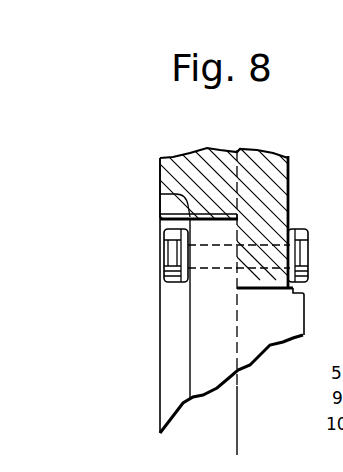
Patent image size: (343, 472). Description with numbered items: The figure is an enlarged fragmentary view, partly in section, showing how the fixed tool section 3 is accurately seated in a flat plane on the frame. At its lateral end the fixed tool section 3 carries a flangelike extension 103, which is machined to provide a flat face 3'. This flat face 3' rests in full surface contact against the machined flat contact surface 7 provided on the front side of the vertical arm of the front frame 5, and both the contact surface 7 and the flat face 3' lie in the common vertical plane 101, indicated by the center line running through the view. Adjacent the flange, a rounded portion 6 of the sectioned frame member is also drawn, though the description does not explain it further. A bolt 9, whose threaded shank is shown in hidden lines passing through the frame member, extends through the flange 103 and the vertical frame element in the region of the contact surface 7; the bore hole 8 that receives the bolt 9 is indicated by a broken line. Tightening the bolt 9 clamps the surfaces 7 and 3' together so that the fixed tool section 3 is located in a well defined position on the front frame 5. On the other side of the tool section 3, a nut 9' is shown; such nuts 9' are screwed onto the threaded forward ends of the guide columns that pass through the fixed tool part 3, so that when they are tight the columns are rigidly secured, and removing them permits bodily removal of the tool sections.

The front frame 5 is at (190, 158).
The rounded projection 6 is at (160, 194).
The flangelike extension 103 is at (161, 221).
The fixed tool section 3 is at (232, 295).
The machined flat face 3' is at (283, 269).
The machined flat contact surface 7 is at (233, 237).
The bore hole 8 is at (223, 268).
The bolt 9 is at (310, 244).
The nut 9' is at (152, 257).
The common vertical plane 101 is at (237, 434).